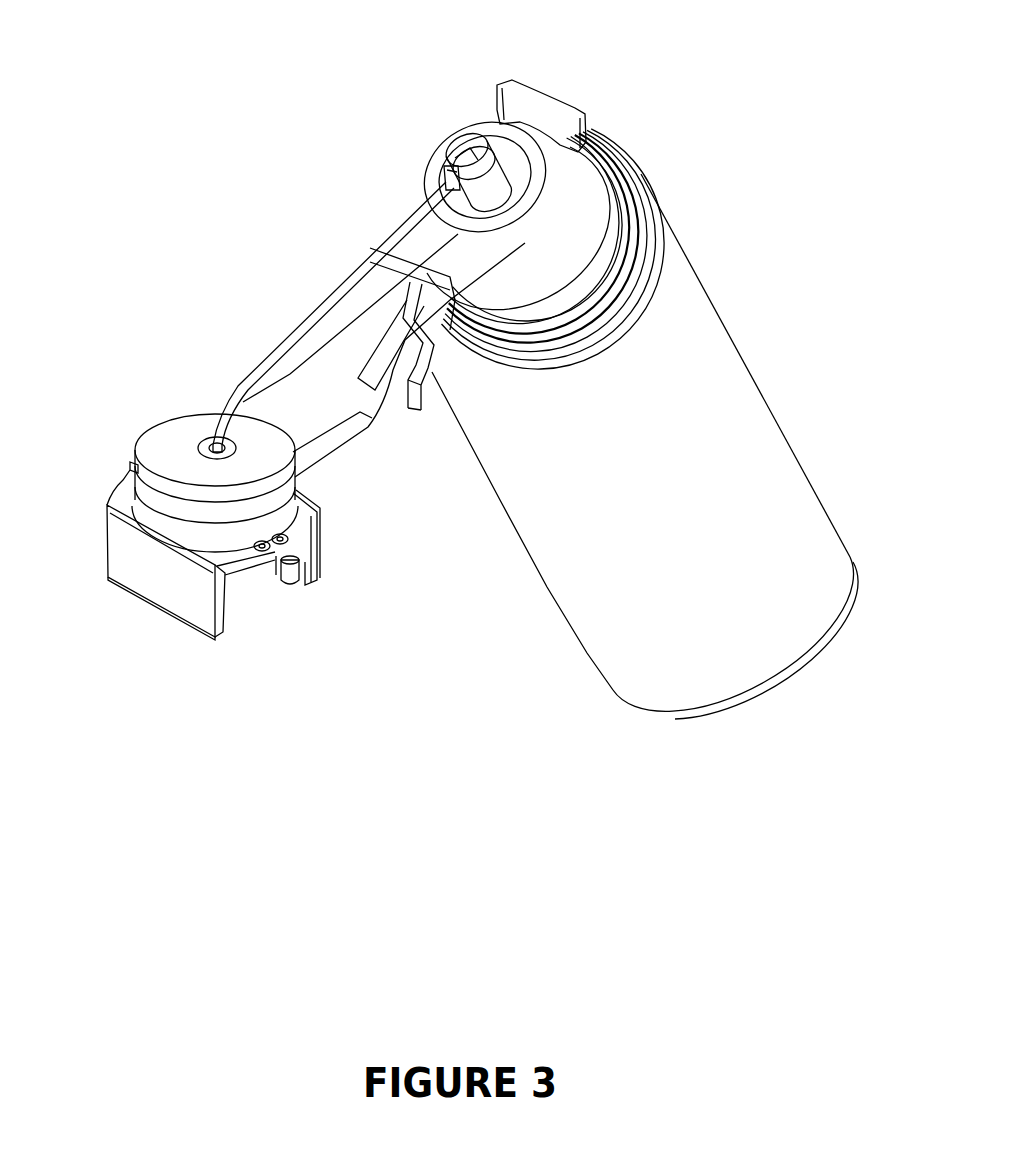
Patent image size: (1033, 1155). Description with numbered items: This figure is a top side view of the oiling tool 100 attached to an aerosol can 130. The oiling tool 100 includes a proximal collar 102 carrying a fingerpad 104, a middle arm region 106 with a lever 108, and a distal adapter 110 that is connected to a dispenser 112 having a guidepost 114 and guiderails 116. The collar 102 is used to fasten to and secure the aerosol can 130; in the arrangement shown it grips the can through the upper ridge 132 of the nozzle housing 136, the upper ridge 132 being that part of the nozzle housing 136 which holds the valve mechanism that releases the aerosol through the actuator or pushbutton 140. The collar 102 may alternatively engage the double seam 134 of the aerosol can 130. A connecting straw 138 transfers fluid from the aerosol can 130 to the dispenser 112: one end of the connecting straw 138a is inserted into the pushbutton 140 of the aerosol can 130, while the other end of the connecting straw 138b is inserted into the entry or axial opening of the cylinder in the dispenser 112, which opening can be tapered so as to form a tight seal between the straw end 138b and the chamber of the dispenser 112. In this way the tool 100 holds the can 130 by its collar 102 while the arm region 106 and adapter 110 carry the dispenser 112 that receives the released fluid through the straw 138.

The oiling tool 100 is at (168, 126).
The proximal collar 102 is at (417, 138).
The fingerpad 104 is at (545, 92).
The middle arm region 106 is at (372, 460).
The lever 108 is at (426, 395).
The distal adapter 110 is at (165, 412).
The dispenser 112 is at (207, 652).
The guidepost 114 is at (292, 590).
The guiderails 116 is at (334, 570).
The aerosol can 130 is at (580, 563).
The upper ridge 132 is at (551, 168).
The double seam 134 is at (637, 236).
The nozzle housing 136 is at (583, 215).
The connecting straw 138 is at (312, 297).
The one end of the connecting straw 138a is at (440, 178).
The other end of the connecting straw 138b is at (213, 432).
The actuator or pushbutton 140 is at (463, 133).